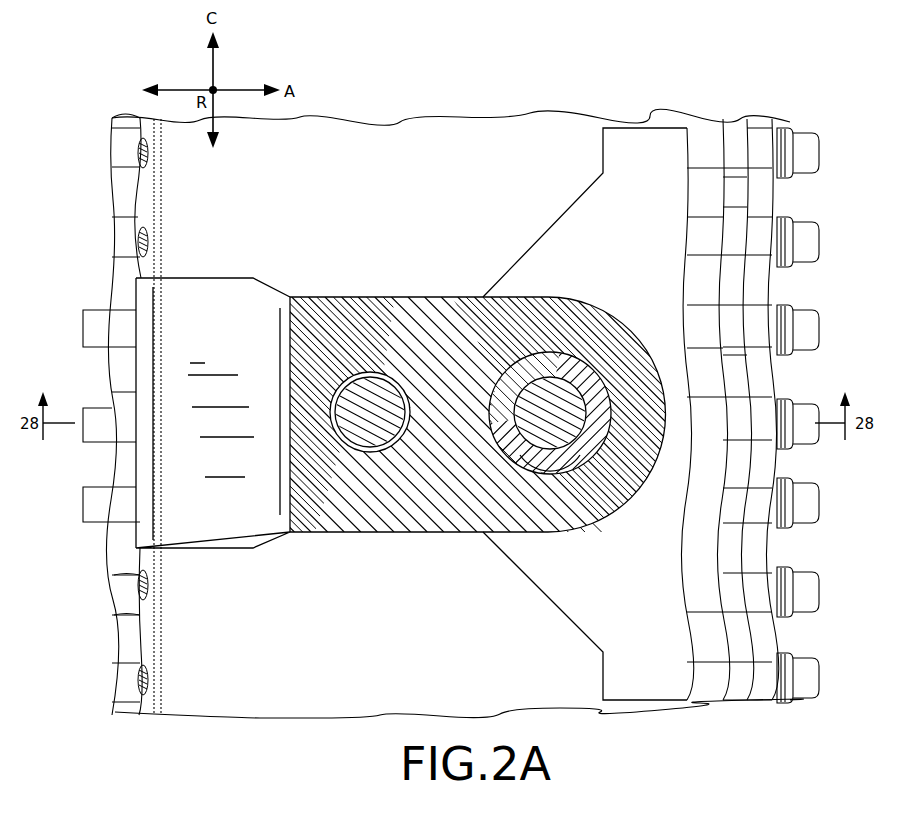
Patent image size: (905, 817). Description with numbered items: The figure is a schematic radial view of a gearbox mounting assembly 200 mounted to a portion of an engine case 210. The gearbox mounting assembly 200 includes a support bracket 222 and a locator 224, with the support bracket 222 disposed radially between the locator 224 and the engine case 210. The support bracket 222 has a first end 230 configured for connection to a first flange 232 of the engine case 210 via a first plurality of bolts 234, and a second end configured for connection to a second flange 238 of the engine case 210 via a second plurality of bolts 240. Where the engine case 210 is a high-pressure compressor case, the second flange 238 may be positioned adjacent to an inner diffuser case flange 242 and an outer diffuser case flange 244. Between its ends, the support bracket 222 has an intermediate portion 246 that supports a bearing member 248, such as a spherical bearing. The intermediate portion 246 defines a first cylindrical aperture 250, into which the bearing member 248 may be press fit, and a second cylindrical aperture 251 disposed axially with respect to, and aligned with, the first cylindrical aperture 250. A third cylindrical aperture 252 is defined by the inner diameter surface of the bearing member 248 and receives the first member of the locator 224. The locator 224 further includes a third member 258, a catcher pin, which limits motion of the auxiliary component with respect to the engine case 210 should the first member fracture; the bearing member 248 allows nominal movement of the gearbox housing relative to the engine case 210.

The gearbox mounting assembly 200 is at (334, 260).
The engine case 210 is at (555, 414).
The support bracket 222 is at (240, 520).
The locator 224 is at (558, 390).
The first end 230 is at (133, 318).
The first flange 232 is at (110, 603).
The first plurality of bolts 234 is at (92, 432).
The second flange 238 is at (647, 627).
The second plurality of bolts 240 is at (812, 445).
The inner diffuser case flange 242 is at (738, 690).
The outer diffuser case flange 244 is at (768, 692).
The intermediate portion 246 is at (422, 532).
The bearing member 248 is at (500, 380).
The first cylindrical aperture 250 is at (503, 452).
The second cylindrical aperture 251 is at (343, 441).
The third cylindrical aperture 252 is at (548, 450).
The third member 258 is at (380, 388).